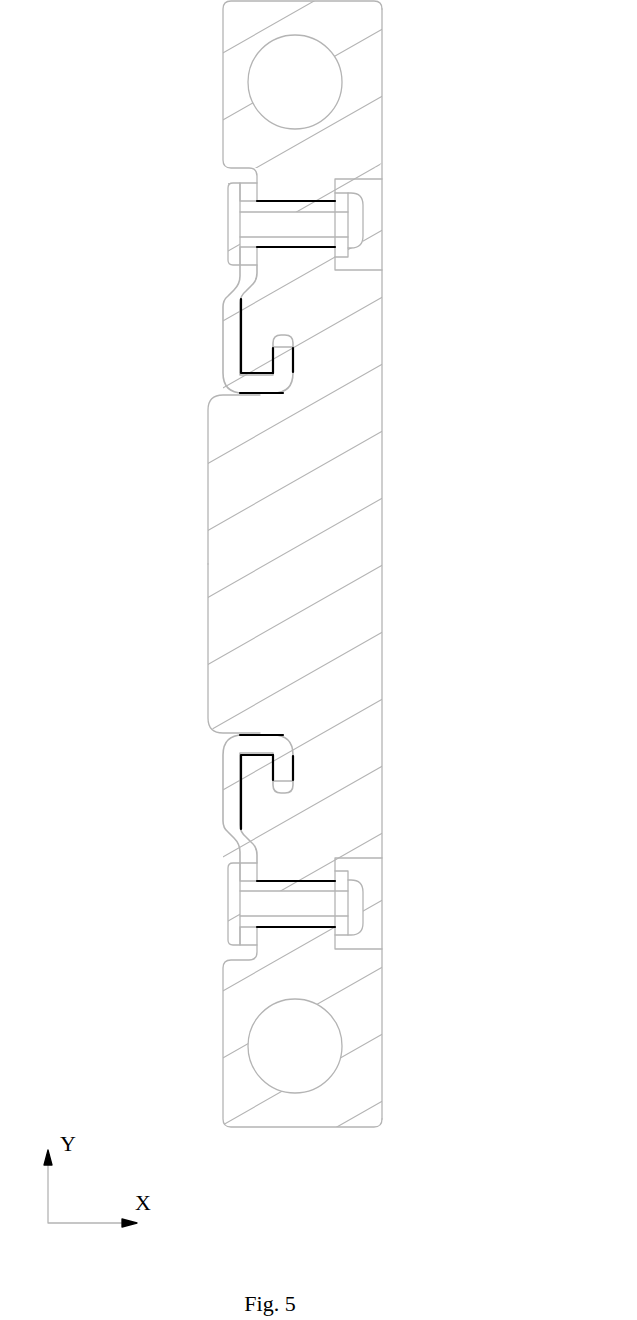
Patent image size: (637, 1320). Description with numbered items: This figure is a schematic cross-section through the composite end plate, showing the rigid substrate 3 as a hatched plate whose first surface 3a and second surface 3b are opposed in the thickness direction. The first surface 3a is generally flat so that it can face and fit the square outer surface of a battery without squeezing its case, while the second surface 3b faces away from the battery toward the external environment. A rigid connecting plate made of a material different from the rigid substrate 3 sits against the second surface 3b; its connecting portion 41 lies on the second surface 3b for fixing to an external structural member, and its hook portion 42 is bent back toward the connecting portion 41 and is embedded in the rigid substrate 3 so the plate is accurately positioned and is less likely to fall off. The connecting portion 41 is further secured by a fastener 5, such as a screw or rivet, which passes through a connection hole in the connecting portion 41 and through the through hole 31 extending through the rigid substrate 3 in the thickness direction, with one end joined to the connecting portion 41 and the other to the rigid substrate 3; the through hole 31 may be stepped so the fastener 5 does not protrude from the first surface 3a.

The rigid substrate 3 is at (343, 610).
The first surface 3a is at (382, 516).
The second surface 3b is at (223, 88).
The through hole 31 is at (370, 190).
The fastener 5 is at (345, 224).
The connecting portion 41 is at (227, 329).
The hook portion 42 is at (285, 368).